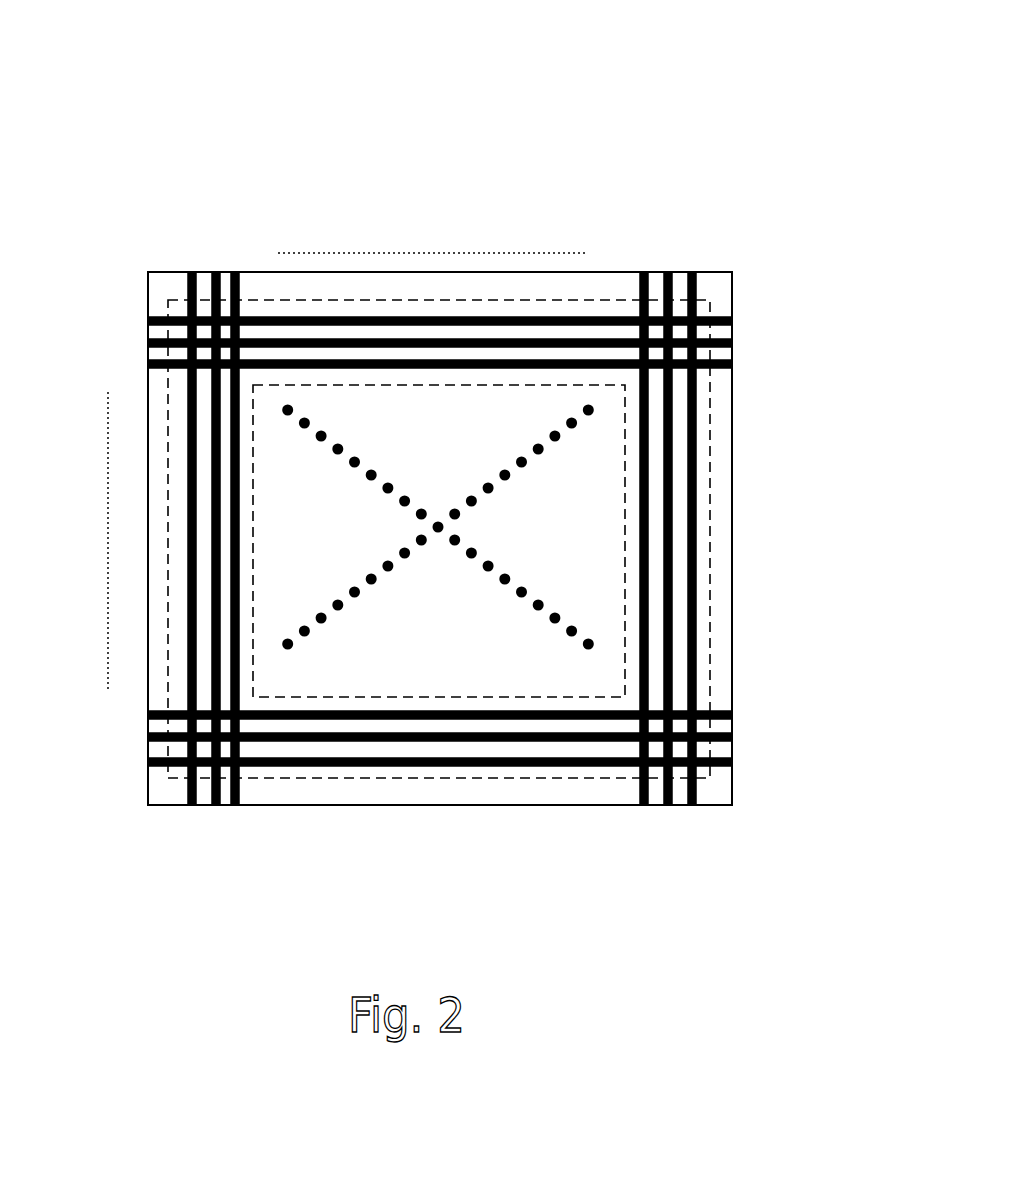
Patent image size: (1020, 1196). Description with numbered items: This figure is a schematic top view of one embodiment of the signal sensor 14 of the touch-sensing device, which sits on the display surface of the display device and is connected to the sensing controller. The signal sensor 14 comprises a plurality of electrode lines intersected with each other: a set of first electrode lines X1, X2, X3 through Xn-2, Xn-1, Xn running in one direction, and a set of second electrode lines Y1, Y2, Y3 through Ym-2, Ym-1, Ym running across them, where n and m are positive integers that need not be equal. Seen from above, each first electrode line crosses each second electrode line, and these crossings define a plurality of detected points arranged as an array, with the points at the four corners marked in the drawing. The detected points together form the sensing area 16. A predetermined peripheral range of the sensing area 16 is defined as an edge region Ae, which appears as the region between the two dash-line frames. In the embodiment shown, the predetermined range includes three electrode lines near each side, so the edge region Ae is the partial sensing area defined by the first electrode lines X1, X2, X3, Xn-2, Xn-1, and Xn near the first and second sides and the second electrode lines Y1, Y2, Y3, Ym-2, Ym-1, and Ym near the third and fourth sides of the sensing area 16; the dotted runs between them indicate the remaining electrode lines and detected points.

The signal sensor 14 is at (731, 77).
The sensing area 16 is at (710, 538).
The edge region Ae is at (698, 432).
The first electrode line X1 is at (174, 515).
The first electrode line X2 is at (207, 515).
The first electrode line X3 is at (242, 515).
The first electrode line Xn-2 is at (613, 501).
The first electrode line Xn-1 is at (649, 501).
The first electrode line Xn is at (687, 508).
The second electrode line Y1 is at (414, 770).
The second electrode line Y2 is at (414, 742).
The second electrode line Y3 is at (414, 713).
The second electrode line Ym-2 is at (396, 373).
The second electrode line Ym-1 is at (396, 343).
The second electrode line Ym is at (410, 312).